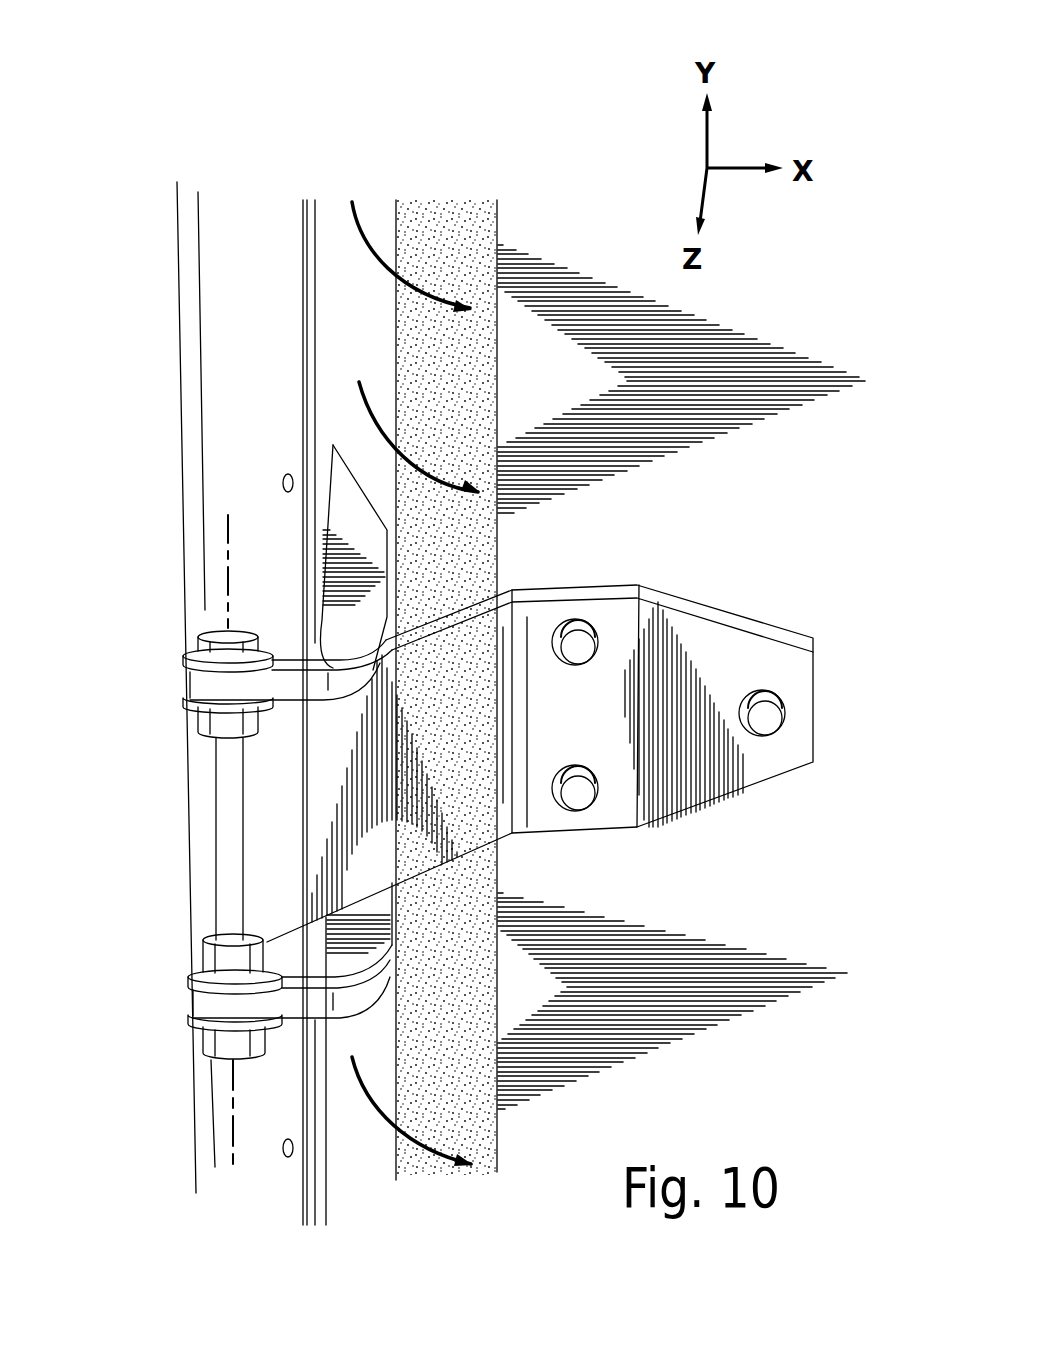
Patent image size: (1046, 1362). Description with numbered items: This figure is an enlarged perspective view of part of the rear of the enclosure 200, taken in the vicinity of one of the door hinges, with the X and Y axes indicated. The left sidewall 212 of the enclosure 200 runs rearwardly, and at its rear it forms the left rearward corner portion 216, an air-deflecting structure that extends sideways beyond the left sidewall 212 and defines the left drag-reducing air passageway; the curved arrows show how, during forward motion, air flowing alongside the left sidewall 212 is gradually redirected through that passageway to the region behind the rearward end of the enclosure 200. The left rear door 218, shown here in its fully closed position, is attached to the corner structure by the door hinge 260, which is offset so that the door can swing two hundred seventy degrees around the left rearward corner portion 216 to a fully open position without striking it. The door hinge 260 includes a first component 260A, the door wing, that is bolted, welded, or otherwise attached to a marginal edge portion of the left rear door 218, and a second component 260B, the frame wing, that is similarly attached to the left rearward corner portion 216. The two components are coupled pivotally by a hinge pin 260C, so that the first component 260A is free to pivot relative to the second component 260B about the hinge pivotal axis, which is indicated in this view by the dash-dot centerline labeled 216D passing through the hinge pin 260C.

The enclosure 200 is at (86, 116).
The left sidewall 212 is at (425, 207).
The left rearward corner portion 216 is at (200, 397).
The channel mounting hole axis 216D is at (227, 543).
The left rear door 218 is at (658, 897).
The door hinge 260 is at (170, 622).
The first component 260A is at (202, 682).
The second component 260B is at (287, 762).
The hinge pin 260C is at (228, 832).